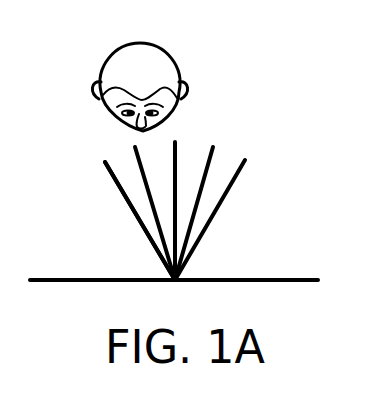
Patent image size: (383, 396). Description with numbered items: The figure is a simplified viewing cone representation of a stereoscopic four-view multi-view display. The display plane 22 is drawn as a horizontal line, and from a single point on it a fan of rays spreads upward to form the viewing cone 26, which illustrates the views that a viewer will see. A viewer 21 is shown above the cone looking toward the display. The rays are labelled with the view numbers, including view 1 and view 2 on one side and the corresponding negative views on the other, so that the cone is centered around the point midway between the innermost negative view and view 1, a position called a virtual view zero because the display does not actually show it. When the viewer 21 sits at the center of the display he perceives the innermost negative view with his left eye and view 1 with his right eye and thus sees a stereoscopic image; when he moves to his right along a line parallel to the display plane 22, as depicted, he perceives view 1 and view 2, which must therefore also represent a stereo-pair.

The viewer 21 is at (156, 57).
The display screen / viewing plane 22 is at (298, 279).
The viewing cone 26 is at (131, 207).
The view 2 is at (140, 210).
The view 1 is at (155, 209).